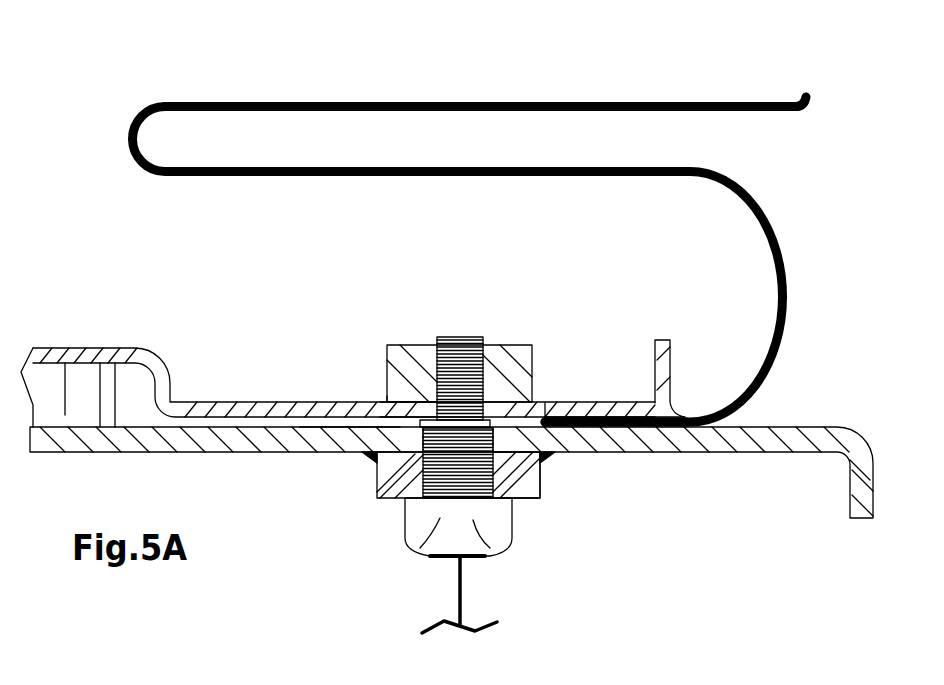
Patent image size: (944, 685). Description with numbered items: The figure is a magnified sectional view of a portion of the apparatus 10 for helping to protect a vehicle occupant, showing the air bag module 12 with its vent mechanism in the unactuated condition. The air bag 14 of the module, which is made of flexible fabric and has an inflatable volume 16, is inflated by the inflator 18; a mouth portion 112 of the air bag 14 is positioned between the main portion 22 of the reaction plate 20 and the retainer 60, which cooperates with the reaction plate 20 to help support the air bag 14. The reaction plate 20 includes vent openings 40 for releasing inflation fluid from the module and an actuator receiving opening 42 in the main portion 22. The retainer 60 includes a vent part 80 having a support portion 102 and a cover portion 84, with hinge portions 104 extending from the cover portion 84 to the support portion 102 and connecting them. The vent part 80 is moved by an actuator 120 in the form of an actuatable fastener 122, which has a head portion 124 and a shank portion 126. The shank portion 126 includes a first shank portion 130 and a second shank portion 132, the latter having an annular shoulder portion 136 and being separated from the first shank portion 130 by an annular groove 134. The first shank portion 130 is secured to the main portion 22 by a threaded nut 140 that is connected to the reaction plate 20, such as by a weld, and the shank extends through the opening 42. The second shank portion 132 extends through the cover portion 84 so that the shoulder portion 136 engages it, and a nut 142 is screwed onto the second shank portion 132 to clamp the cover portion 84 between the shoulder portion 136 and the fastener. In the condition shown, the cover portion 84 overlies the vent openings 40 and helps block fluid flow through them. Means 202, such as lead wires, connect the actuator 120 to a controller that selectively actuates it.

The apparatus 10 is at (100, 115).
The air bag module 12 is at (463, 217).
The air bag 14 is at (486, 103).
The inflatable volume 16 is at (295, 259).
The inflator 18 is at (85, 383).
The reaction plate 20 is at (220, 440).
The main portion 22 is at (190, 440).
The vent openings 40 is at (347, 452).
The actuator receiving opening 42 is at (352, 431).
The retainer 60 is at (257, 410).
The vent part 80 is at (371, 400).
The cover portion 84 is at (361, 402).
The support portion 102 is at (590, 410).
The hinge portions 104 is at (549, 416).
The mouth portion 112 is at (582, 424).
The actuator 120 is at (473, 520).
The actuatable fastener 122 is at (497, 515).
The head portion 124 is at (440, 518).
The shank portion 126 is at (480, 470).
The first shank portion 130 is at (430, 490).
The second shank portion 132 is at (466, 352).
The annular groove 134 is at (383, 403).
The annular shoulder portion 136 is at (431, 400).
The threaded nut 140 is at (373, 485).
The nut 142 is at (505, 375).
The means 202 is at (463, 605).